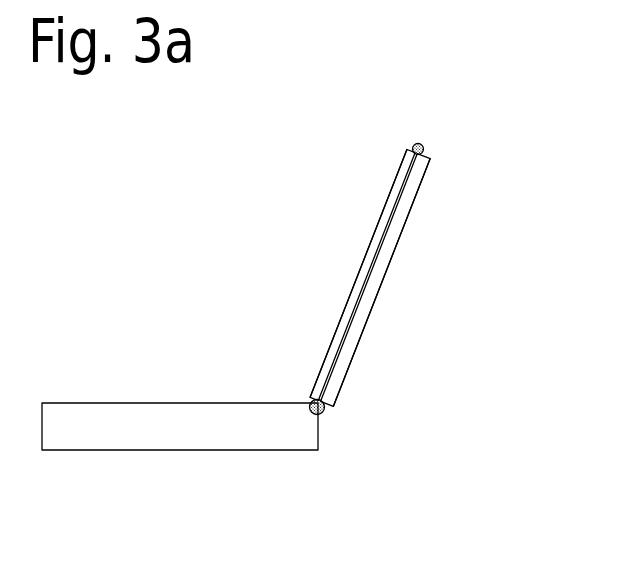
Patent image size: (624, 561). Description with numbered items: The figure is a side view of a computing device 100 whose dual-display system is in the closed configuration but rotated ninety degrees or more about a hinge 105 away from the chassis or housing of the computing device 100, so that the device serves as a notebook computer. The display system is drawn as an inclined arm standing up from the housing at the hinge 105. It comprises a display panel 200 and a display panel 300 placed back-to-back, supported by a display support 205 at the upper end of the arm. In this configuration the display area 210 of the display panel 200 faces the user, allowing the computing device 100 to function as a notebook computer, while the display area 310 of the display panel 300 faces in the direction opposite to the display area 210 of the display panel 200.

The computing device 100 is at (174, 428).
The hinge 105 is at (320, 415).
The display panel 200 is at (395, 170).
The display support 205 is at (423, 145).
The display area 210 is at (351, 287).
The display panel 300 is at (340, 378).
The display area 310 is at (393, 250).